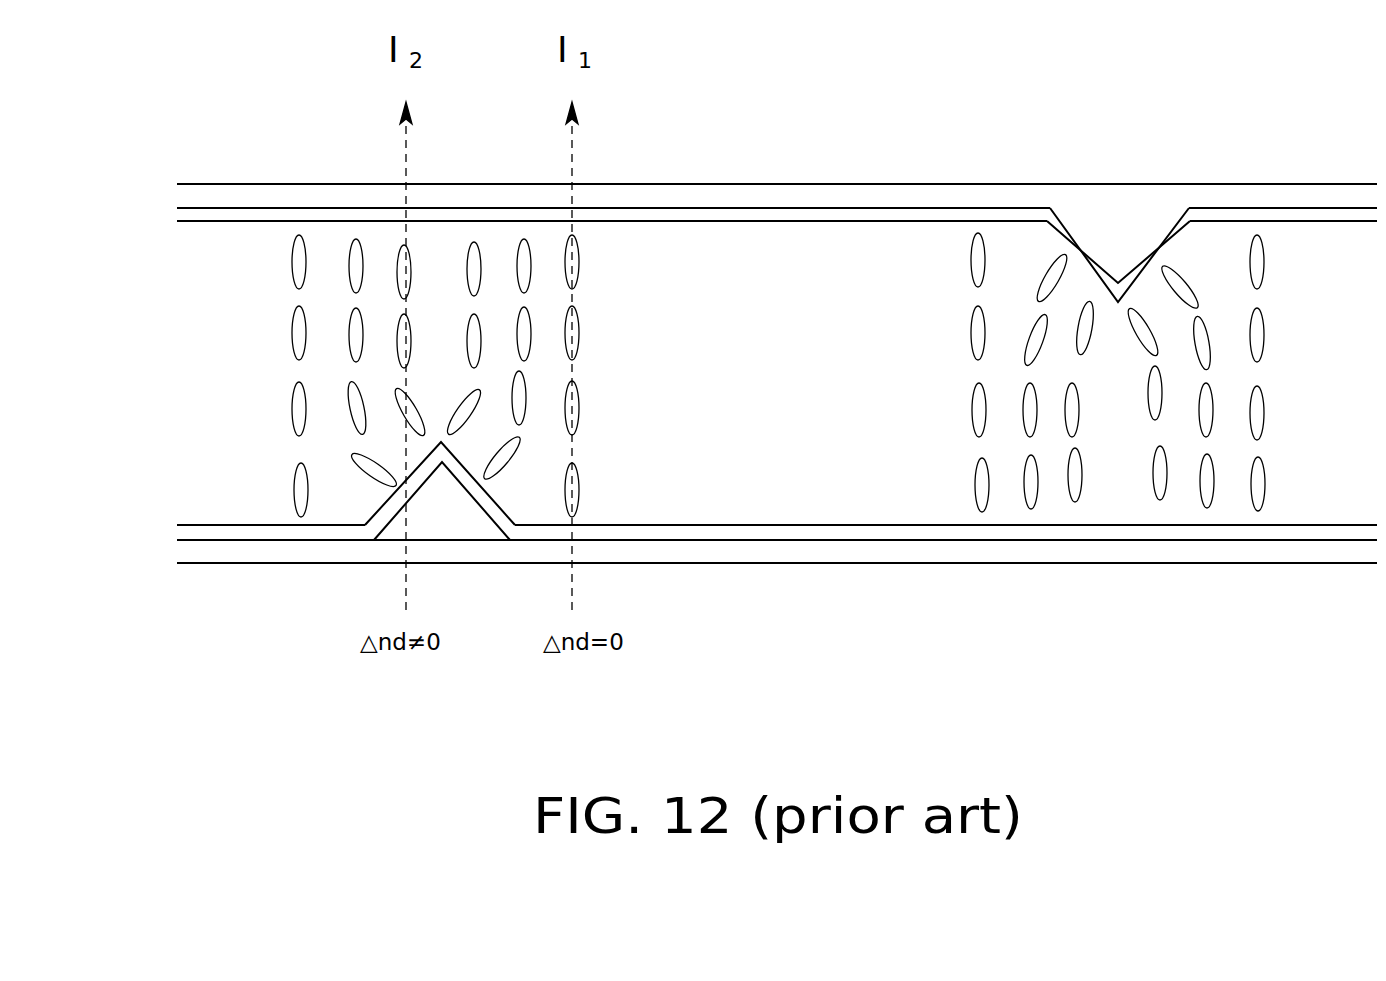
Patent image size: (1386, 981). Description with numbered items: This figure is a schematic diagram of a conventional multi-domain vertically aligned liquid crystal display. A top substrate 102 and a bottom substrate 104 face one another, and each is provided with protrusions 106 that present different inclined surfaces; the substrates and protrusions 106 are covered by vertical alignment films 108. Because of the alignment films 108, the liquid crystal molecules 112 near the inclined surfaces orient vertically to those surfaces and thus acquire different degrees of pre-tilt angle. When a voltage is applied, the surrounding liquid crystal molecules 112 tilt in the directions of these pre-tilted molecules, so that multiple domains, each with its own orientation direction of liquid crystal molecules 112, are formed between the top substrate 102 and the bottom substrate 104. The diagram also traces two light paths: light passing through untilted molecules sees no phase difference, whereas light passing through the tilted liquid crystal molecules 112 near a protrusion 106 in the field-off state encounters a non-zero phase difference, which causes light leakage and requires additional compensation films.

The top substrate 102 is at (803, 198).
The bottom substrate 104 is at (797, 547).
The protrusions 106 is at (439, 504).
The vertical alignment films 108 is at (870, 222).
The liquid crystal molecules 112 is at (520, 457).